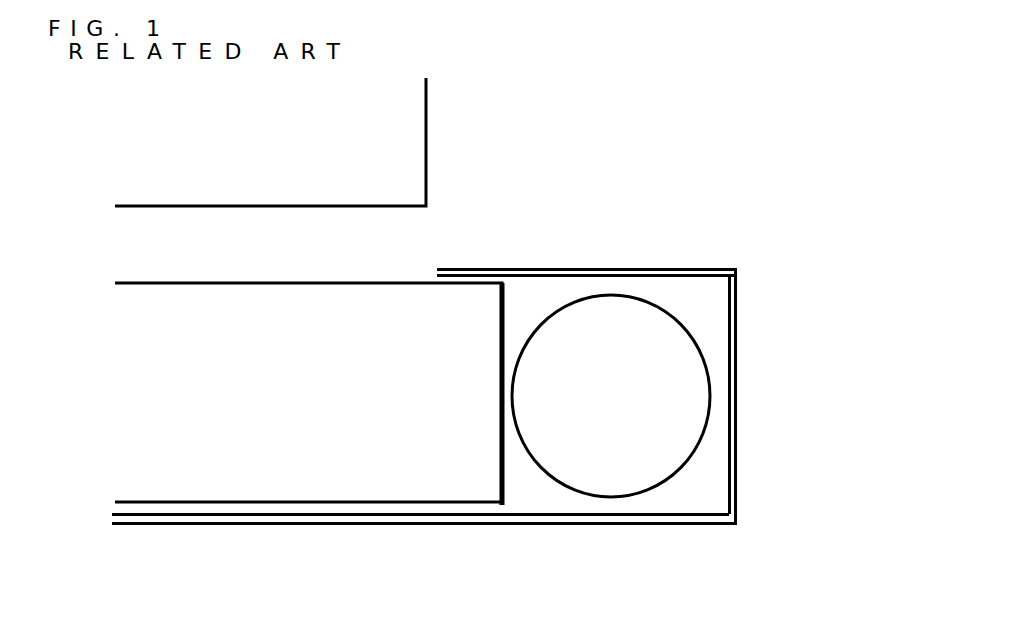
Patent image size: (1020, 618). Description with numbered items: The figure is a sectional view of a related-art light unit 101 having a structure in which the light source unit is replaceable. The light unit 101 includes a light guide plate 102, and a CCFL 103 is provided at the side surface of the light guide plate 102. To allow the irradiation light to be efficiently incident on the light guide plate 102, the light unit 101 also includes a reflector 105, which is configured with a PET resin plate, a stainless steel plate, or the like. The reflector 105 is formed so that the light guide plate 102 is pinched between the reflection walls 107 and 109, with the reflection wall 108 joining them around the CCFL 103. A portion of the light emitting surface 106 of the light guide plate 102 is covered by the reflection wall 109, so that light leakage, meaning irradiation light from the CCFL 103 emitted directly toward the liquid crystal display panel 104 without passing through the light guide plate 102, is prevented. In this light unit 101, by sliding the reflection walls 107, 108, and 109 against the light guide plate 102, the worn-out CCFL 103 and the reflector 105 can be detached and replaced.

The light unit 101 is at (714, 230).
The light guide plate 102 is at (212, 465).
The CCFL 103 is at (617, 476).
The liquid crystal display panel 104 is at (408, 122).
The reflector 105 is at (307, 538).
The light emitting surface 106 is at (474, 233).
The reflection wall 107 is at (490, 525).
The reflection wall 108 is at (737, 366).
The reflection wall 109 is at (597, 268).